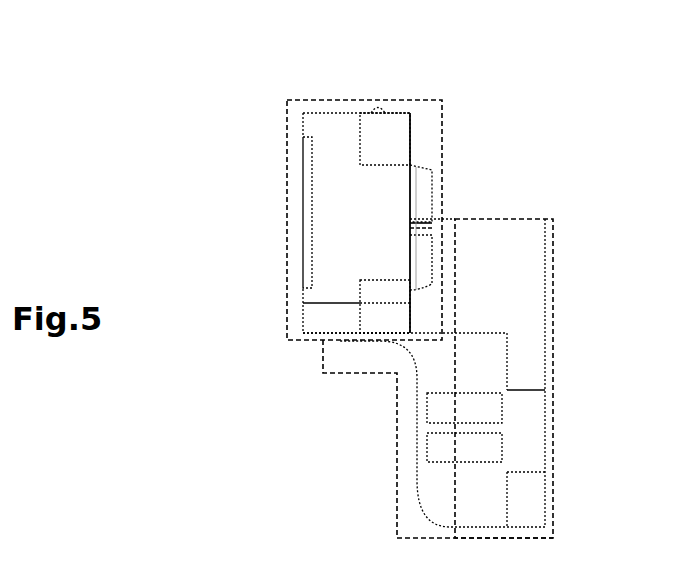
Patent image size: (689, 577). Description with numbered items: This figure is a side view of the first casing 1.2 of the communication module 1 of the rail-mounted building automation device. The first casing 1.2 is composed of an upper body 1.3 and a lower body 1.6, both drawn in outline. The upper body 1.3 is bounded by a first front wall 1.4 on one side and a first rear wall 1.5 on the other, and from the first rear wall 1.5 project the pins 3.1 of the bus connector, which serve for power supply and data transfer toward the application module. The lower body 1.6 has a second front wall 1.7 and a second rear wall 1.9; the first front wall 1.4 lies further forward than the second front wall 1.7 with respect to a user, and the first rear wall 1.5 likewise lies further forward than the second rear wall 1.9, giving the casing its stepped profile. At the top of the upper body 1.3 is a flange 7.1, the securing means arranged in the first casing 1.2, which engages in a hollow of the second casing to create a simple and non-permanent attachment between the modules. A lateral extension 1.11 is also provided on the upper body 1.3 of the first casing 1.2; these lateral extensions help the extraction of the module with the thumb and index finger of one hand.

The communication module 1 is at (196, 446).
The first casing 1.2 is at (261, 392).
The upper body 1.3 is at (287, 280).
The first front wall 1.4 is at (303, 132).
The first rear wall 1.5 is at (413, 125).
The lower body 1.6 is at (395, 520).
The second front wall 1.7 is at (425, 437).
The second rear wall 1.9 is at (545, 253).
The lateral extensions 1.11 is at (305, 207).
The pins 3.1 is at (432, 188).
The flange 7.1 is at (378, 106).